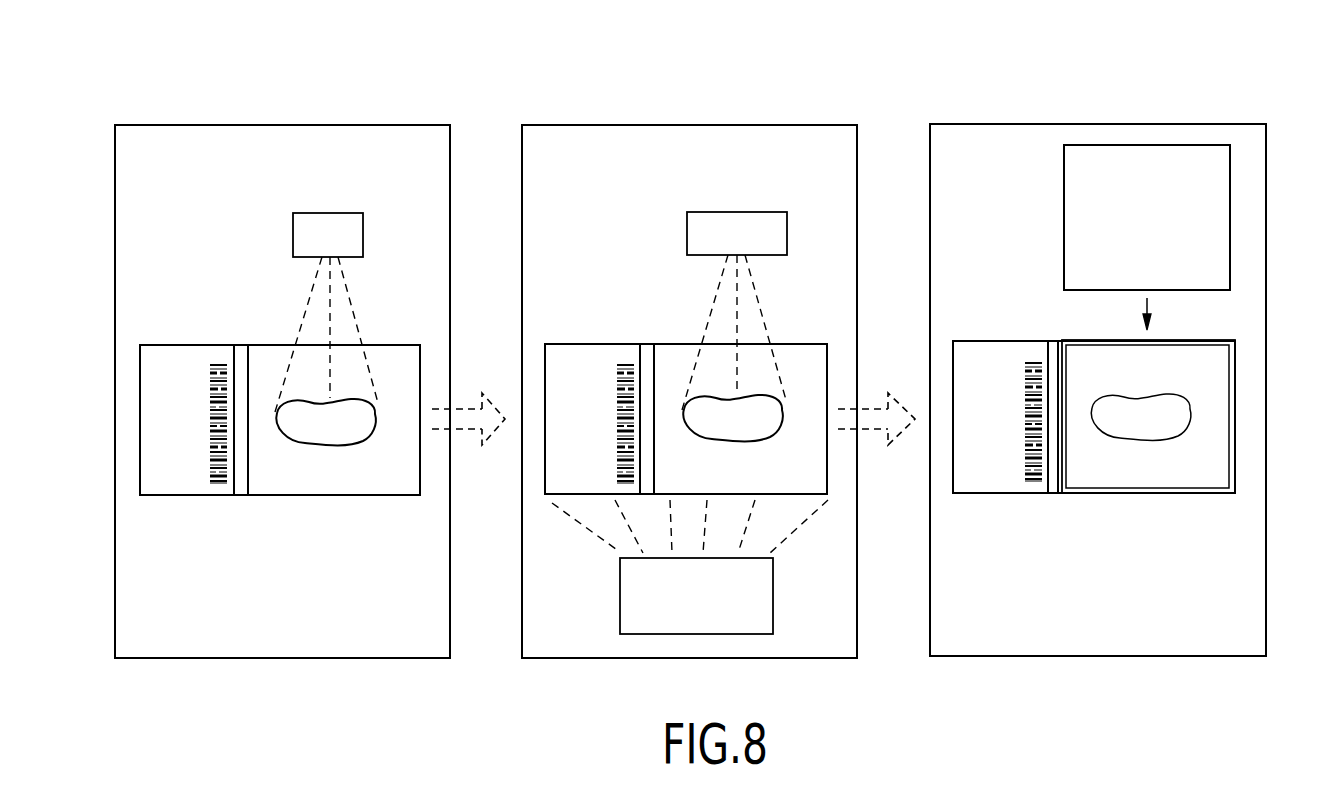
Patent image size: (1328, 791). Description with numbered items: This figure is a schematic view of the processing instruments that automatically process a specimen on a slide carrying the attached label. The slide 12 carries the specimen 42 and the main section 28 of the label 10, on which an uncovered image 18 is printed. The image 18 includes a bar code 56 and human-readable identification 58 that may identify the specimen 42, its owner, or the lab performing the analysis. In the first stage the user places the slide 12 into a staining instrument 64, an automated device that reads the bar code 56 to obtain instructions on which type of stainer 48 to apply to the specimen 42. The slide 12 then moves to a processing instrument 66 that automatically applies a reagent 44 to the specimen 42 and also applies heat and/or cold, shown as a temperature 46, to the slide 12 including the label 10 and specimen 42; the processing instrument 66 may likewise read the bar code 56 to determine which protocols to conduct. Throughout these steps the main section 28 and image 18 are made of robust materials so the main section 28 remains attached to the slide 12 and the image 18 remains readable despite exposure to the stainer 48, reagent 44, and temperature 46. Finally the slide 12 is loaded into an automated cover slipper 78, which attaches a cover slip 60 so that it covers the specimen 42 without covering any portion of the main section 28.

The label 10 is at (190, 488).
The slide 12 is at (397, 495).
The image 18 is at (190, 372).
The main section 28 is at (153, 490).
The specimen 42 is at (332, 447).
The reagent 44 is at (765, 212).
The temperature 46 is at (773, 605).
The stainer 48 is at (355, 213).
The bar code 56 is at (218, 483).
The identification 58 is at (172, 345).
The cover slip 60 is at (1064, 187).
The staining instrument 64 is at (272, 125).
The processing instrument 66 is at (653, 125).
The automated cover slipper 78 is at (1097, 124).